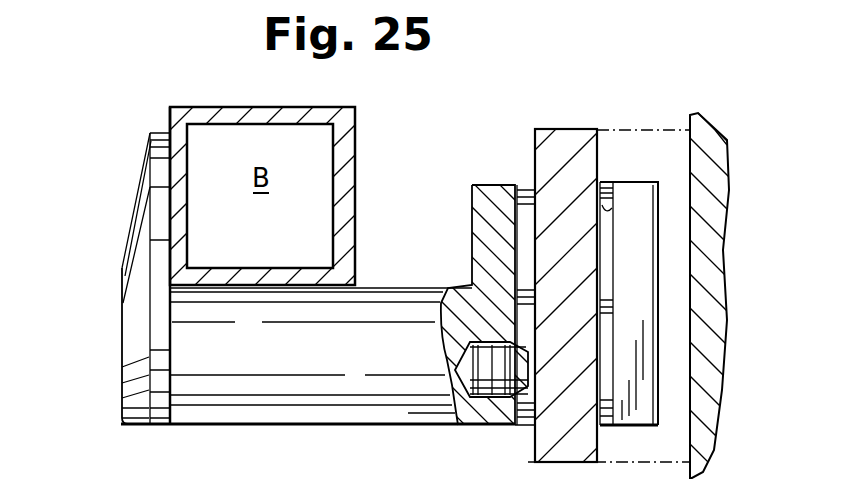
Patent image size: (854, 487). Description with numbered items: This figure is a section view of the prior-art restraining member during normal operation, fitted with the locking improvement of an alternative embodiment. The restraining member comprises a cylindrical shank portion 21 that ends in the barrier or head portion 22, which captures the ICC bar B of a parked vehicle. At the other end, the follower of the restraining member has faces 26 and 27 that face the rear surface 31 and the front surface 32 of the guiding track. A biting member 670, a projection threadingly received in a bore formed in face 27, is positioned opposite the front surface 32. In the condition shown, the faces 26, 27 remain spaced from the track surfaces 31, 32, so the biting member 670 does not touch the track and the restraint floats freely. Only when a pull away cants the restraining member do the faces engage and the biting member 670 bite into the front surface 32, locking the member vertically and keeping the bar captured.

The shank portion 21 is at (283, 360).
The head portion 22 is at (123, 352).
The follower surface 26 is at (610, 182).
The follower surface 27 is at (527, 205).
The rear surface 31 is at (598, 170).
The front surface 32 is at (535, 152).
The biting member 670 is at (507, 357).